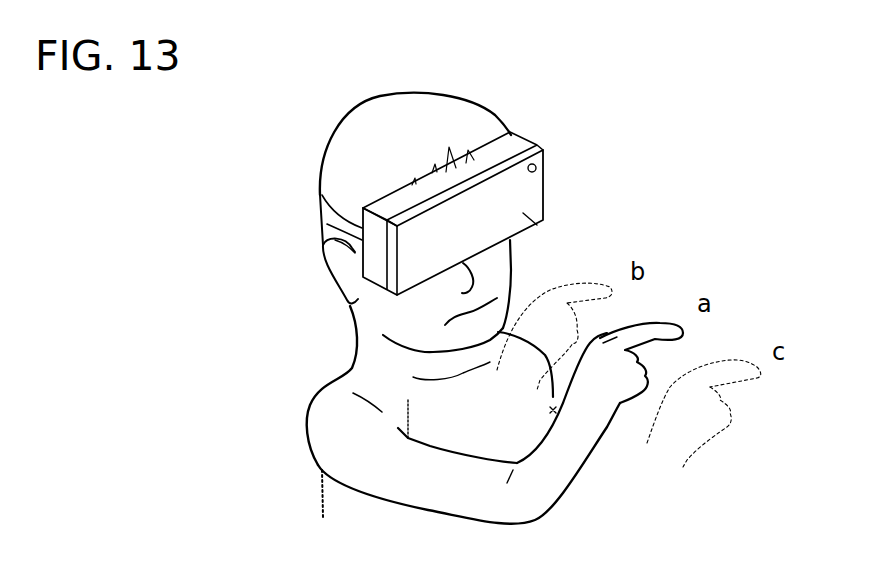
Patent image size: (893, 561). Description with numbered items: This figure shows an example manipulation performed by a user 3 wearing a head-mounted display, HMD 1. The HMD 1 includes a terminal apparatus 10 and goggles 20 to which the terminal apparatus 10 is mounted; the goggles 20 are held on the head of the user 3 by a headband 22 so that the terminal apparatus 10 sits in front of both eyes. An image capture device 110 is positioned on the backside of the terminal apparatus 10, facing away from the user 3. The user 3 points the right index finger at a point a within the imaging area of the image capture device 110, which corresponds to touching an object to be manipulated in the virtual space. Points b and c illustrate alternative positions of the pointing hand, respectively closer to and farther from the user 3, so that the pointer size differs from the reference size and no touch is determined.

The head-mounted display 1 is at (618, 120).
The user 3 is at (338, 145).
The terminal apparatus 10 is at (505, 199).
The goggles 20 is at (509, 143).
The headband 22 is at (332, 224).
The image capture device 110 is at (547, 171).